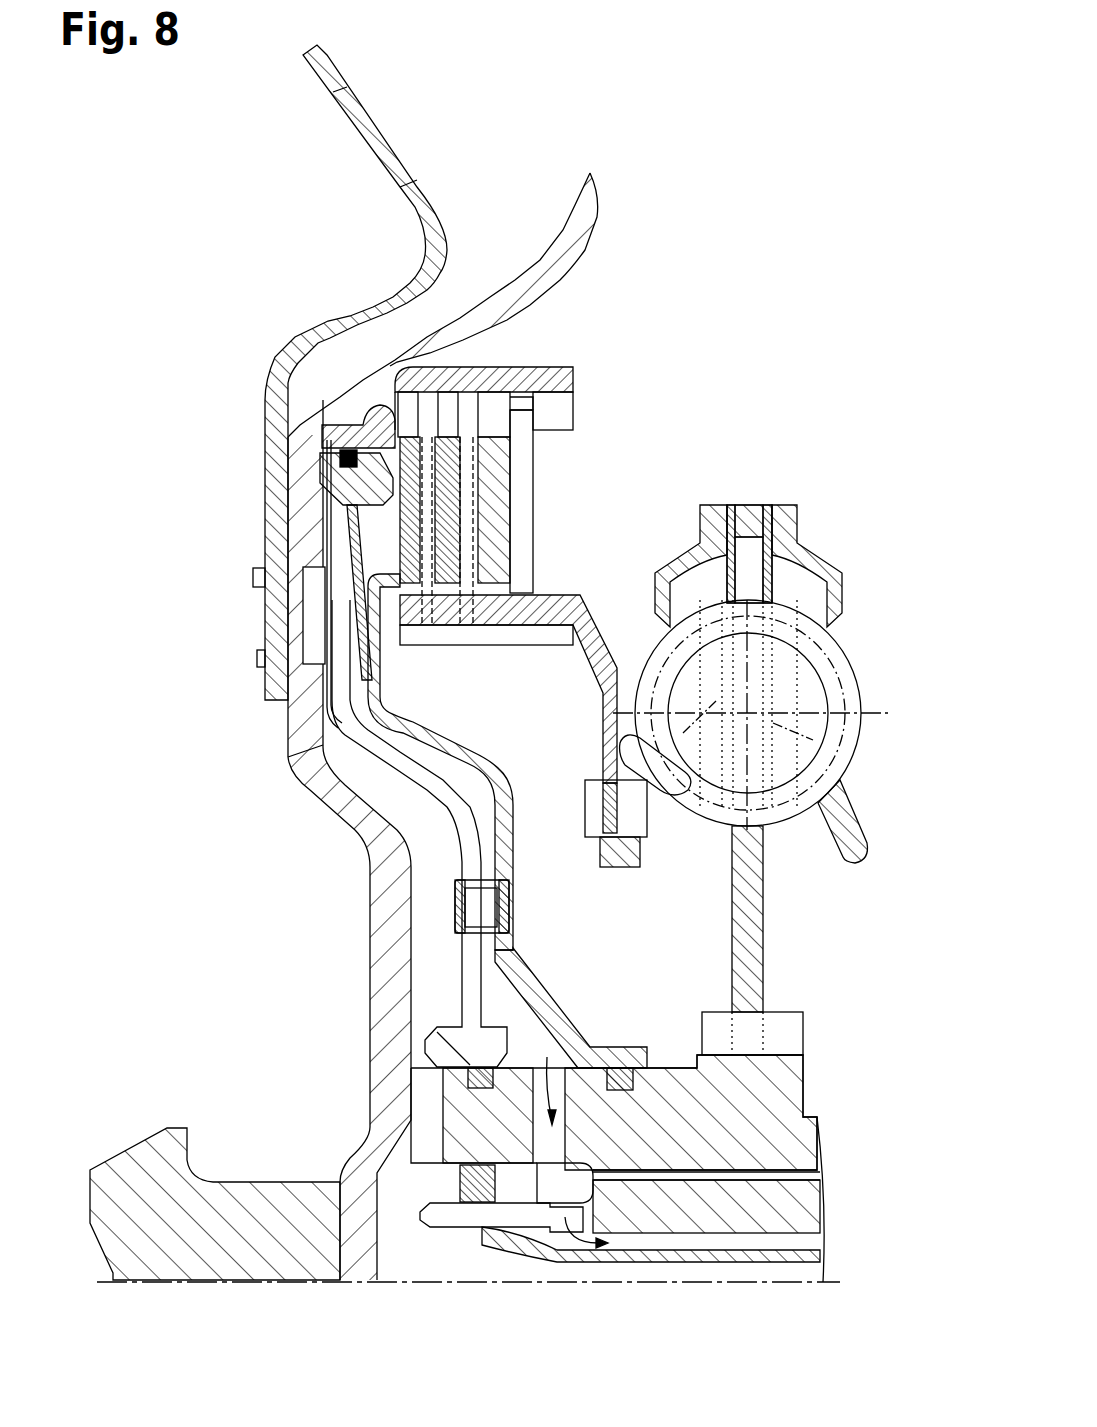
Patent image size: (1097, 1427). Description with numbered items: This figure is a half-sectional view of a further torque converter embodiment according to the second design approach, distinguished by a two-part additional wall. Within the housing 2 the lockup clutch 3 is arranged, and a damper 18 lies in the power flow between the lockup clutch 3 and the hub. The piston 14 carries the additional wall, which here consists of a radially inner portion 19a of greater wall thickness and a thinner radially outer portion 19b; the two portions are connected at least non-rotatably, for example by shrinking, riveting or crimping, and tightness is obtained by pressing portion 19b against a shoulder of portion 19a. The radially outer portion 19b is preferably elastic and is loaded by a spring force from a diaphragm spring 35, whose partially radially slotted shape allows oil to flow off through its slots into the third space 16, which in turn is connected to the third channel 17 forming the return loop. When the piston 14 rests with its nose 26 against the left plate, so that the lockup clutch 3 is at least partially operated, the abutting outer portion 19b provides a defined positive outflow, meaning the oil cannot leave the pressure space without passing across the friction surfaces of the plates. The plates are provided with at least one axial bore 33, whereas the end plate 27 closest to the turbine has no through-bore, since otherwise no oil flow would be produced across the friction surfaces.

The housing 2 is at (387, 947).
The lockup clutch 3 is at (582, 352).
The piston 14 is at (307, 753).
The third space 16 is at (530, 990).
The third channel 17 is at (543, 1057).
The damper 18 is at (757, 450).
The radially inner portion of additional wall 19a is at (450, 740).
The radially outer portion of additional wall 19b is at (373, 640).
The nose 26 is at (353, 490).
The end plate 27 is at (490, 475).
The axial bore 33 is at (487, 517).
The diaphragm spring 35 is at (360, 580).